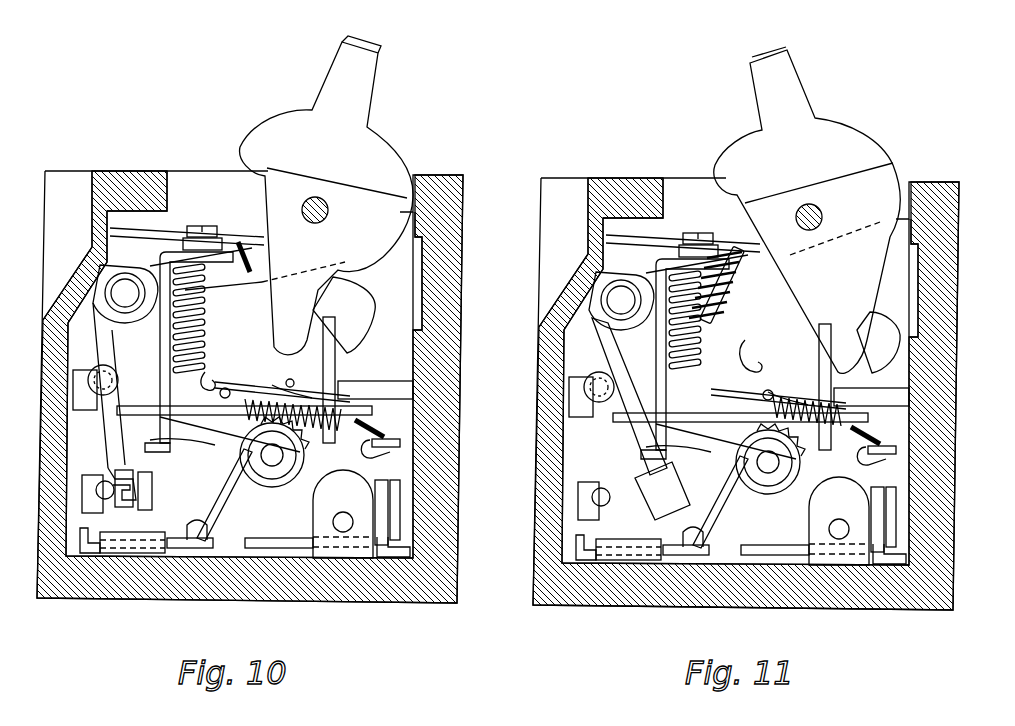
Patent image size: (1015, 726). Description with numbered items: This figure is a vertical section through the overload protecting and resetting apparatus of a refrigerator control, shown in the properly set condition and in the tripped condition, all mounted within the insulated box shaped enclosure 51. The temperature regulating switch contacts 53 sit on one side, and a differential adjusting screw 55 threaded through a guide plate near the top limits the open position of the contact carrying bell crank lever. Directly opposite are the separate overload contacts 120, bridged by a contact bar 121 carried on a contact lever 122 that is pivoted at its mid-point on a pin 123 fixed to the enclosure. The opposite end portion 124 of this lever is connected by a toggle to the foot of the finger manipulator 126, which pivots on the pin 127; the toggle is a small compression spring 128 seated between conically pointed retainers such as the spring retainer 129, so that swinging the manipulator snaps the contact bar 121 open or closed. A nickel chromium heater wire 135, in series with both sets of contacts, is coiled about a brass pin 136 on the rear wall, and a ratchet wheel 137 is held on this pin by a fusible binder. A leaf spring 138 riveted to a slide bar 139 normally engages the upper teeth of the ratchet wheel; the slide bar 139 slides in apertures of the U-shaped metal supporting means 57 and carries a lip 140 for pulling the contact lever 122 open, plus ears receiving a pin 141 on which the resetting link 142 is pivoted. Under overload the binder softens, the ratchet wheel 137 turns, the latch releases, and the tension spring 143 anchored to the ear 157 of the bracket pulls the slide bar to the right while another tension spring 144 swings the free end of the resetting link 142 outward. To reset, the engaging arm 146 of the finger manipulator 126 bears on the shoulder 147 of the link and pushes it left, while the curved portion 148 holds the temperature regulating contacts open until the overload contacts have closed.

In FIG. 10, the insulated box shaped enclosure 51 is at (442, 505).
In FIG. 10, the switch contacts 53 is at (393, 533).
In FIG. 11, the switch contacts 53 is at (887, 535).
In FIG. 10, the differential adjusting screw 55 is at (203, 224).
In FIG. 11, the differential adjusting screw 55 is at (694, 231).
In FIG. 10, the U-shaped metal supporting means 57 is at (162, 350).
In FIG. 11, the U-shaped metal supporting means 57 is at (660, 355).
In FIG. 10, the contacts 120 is at (83, 530).
In FIG. 11, the contacts 120 is at (585, 537).
In FIG. 10, the contact bar 121 is at (110, 478).
In FIG. 11, the contact bar 121 is at (633, 483).
In FIG. 10, the contact lever 122 is at (110, 347).
In FIG. 11, the contact lever 122 is at (607, 358).
In FIG. 10, the pin 123 is at (123, 292).
In FIG. 11, the pin 123 is at (620, 300).
In FIG. 10, the end portion of the lever 124 is at (260, 237).
In FIG. 11, the end portion of the lever 124 is at (745, 178).
In FIG. 10, the finger manipulator 126 is at (363, 121).
In FIG. 11, the finger manipulator 126 is at (855, 135).
In FIG. 10, the pin 127 is at (330, 203).
In FIG. 11, the pin 127 is at (822, 212).
In FIG. 11, the compression spring 128 is at (770, 282).
In FIG. 11, the spring retainer 129 is at (758, 260).
In FIG. 10, the heater wire 135 is at (218, 507).
In FIG. 11, the heater wire 135 is at (712, 505).
In FIG. 10, the brass pin 136 is at (274, 456).
In FIG. 11, the brass pin 136 is at (770, 464).
In FIG. 10, the ratchet wheel 137 is at (222, 480).
In FIG. 11, the ratchet wheel 137 is at (720, 480).
In FIG. 10, the leaf spring 138 is at (142, 460).
In FIG. 11, the leaf spring 138 is at (800, 460).
In FIG. 10, the slide bar 139 is at (358, 387).
In FIG. 11, the slide bar 139 is at (875, 405).
In FIG. 10, the lip 140 is at (80, 397).
In FIG. 11, the lip 140 is at (585, 402).
In FIG. 10, the pin 141 is at (93, 377).
In FIG. 11, the pin 141 is at (600, 385).
In FIG. 10, the resetting link 142 is at (235, 380).
In FIG. 11, the resetting link 142 is at (768, 392).
In FIG. 10, the tension spring 143 is at (352, 420).
In FIG. 11, the tension spring 143 is at (883, 423).
In FIG. 10, the tension spring 144 is at (195, 312).
In FIG. 11, the tension spring 144 is at (708, 355).
In FIG. 10, the engaging arm 146 is at (355, 320).
In FIG. 11, the engaging arm 146 is at (900, 336).
In FIG. 10, the shoulder 147 is at (290, 384).
In FIG. 11, the shoulder 147 is at (838, 381).
In FIG. 10, the curved portion 148 is at (213, 373).
In FIG. 11, the curved portion 148 is at (745, 340).
In FIG. 10, the ear 157 is at (400, 443).
In FIG. 11, the ear 157 is at (898, 447).